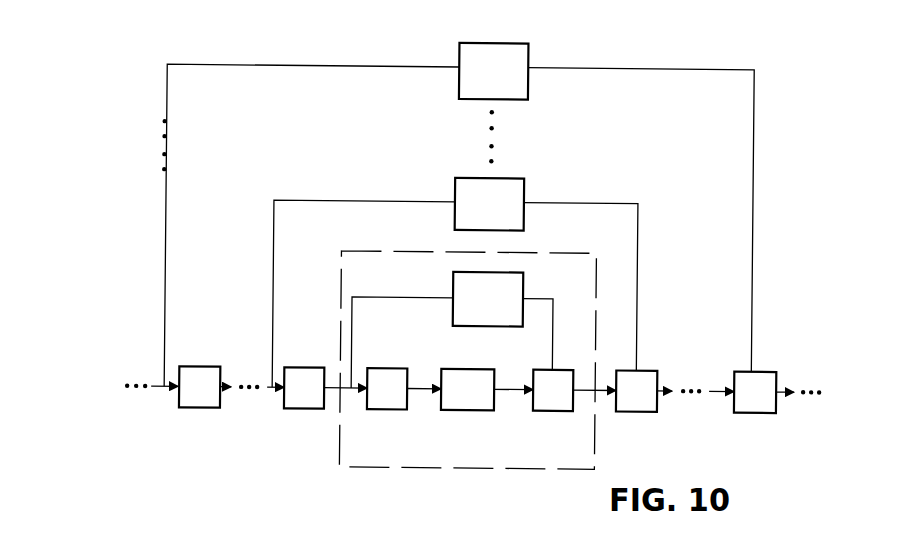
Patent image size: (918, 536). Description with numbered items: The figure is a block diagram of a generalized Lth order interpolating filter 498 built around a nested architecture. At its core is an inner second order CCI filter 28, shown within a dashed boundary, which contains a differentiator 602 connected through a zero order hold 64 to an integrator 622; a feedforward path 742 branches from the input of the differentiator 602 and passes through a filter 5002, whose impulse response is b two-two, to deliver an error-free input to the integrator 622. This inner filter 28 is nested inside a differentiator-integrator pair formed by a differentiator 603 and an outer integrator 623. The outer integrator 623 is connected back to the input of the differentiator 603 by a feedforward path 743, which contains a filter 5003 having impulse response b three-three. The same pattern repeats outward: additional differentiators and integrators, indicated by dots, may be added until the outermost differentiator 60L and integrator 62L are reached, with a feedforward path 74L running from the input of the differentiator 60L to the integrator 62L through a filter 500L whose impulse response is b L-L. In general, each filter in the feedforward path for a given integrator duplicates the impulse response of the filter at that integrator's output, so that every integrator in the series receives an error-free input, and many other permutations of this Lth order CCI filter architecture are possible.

The Lth order filter 498 is at (130, 66).
The filter 500L is at (527, 52).
The feedforward path 74L is at (694, 60).
The filter 5003 is at (525, 182).
The feedforward path 743 is at (628, 200).
The second order CCI filter 28 is at (370, 252).
The filter 5002 is at (437, 330).
The feedforward path 742 is at (524, 281).
The differentiator 60L is at (198, 410).
The differentiator 603 is at (308, 410).
The differentiator 602 is at (390, 410).
The zero order hold 64 is at (466, 410).
The integrator 622 is at (553, 410).
The integrator 623 is at (638, 410).
The integrator 62L is at (755, 410).